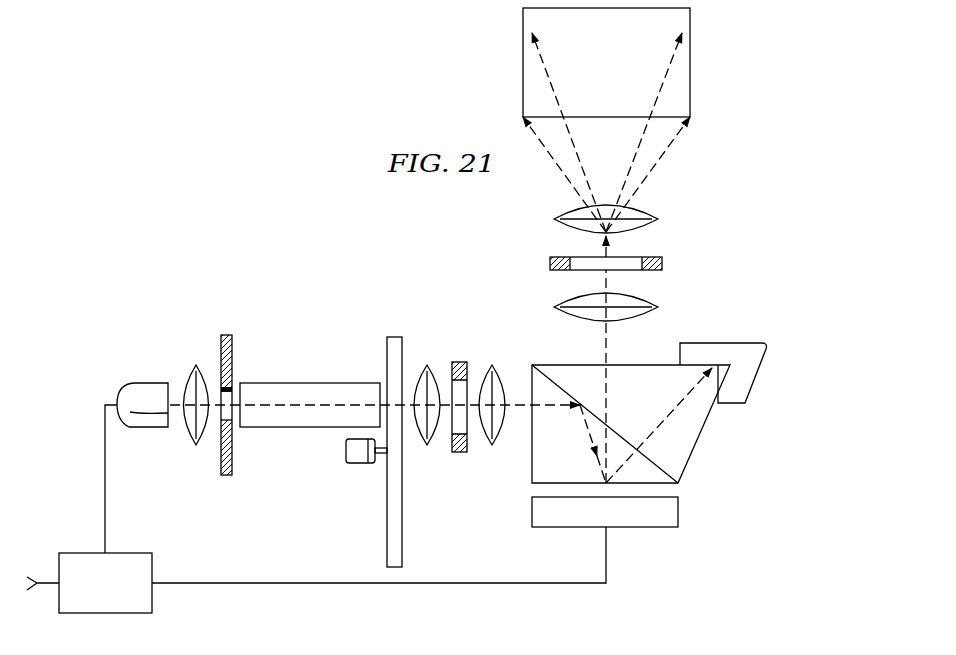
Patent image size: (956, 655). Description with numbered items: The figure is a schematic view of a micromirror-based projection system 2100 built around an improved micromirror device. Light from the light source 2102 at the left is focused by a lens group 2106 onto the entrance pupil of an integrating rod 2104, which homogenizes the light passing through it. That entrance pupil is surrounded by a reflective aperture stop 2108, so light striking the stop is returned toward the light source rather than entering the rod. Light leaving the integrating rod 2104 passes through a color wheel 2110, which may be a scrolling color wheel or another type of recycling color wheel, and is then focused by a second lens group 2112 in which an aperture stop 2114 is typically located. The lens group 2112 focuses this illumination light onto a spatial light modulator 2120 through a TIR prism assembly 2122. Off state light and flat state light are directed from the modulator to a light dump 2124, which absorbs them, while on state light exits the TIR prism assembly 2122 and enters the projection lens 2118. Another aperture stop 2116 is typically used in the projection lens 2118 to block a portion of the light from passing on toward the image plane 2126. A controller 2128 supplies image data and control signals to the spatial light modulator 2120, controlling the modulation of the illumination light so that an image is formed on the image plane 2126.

The micromirror-based projection system 2100 is at (335, 217).
The light source 2102 is at (146, 383).
The integrating rod 2104 is at (308, 383).
The lens group 2106 is at (194, 365).
The reflective aperture stop 2108 is at (226, 335).
The color wheel 2110 is at (393, 337).
The lens group 2112 is at (507, 361).
The aperture stop 2114 is at (458, 453).
The aperture stop 2116 is at (550, 263).
The projection lens 2118 is at (672, 202).
The spatial light modulator 2120 is at (680, 510).
The TIR prism assembly 2122 is at (707, 433).
The light dump 2124 is at (727, 343).
The image plane 2126 is at (628, 78).
The controller 2128 is at (126, 594).